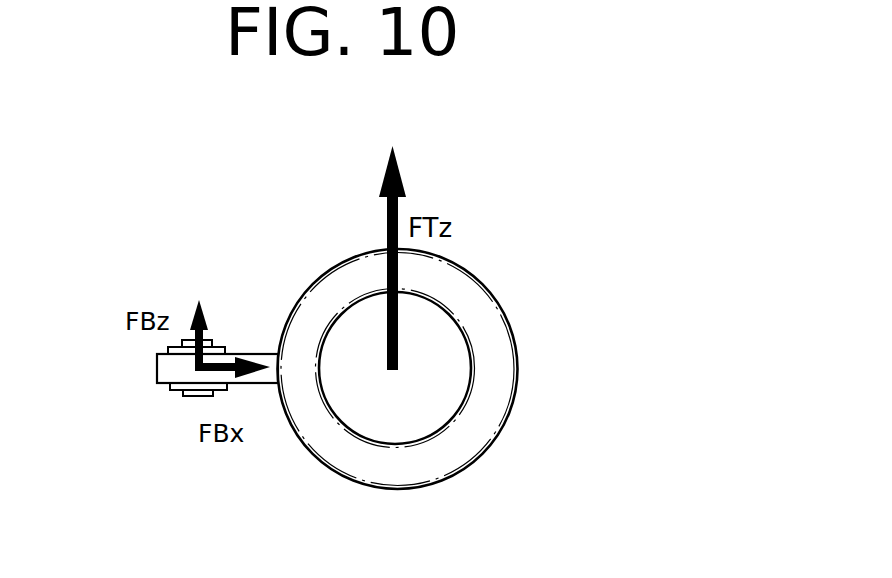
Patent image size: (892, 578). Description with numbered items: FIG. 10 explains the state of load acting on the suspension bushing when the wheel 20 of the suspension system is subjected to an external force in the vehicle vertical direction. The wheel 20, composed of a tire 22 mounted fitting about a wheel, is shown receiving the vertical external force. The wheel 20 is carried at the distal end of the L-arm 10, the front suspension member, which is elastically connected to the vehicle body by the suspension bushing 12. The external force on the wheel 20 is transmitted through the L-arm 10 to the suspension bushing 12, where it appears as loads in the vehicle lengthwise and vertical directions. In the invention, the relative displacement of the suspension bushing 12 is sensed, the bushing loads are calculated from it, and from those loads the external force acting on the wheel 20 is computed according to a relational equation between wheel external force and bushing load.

The L-arm 10 is at (266, 360).
The suspension bushing 12 is at (173, 402).
The wheel 20 is at (510, 313).
The tire 22 is at (335, 282).